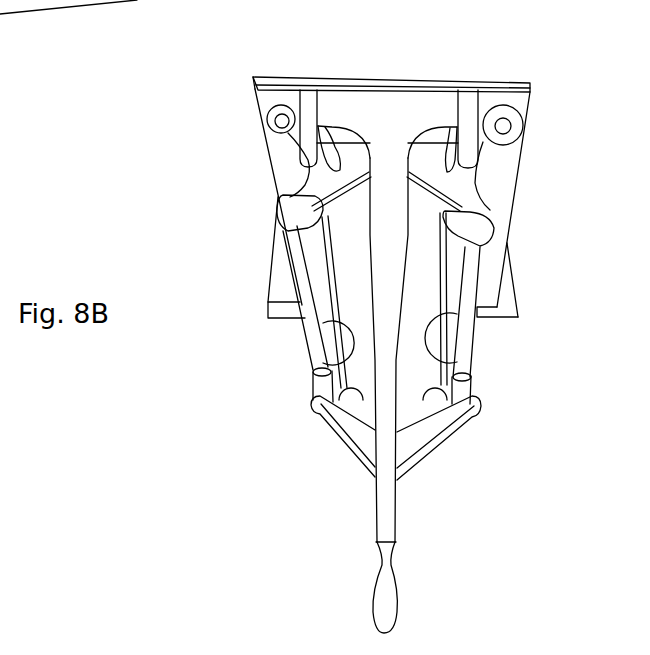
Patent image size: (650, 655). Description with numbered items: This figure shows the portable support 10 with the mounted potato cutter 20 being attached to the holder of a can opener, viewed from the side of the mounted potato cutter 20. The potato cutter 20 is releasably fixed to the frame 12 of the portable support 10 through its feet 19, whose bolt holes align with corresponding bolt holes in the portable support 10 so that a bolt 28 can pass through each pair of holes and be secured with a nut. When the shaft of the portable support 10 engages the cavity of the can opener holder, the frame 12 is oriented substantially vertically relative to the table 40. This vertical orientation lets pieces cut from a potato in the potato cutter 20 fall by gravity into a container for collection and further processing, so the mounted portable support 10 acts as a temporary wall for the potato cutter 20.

The portable support 10 is at (518, 58).
The frame 12 is at (498, 185).
The feet 19 is at (279, 110).
The potato cutter 20 is at (458, 455).
The bolt 28 is at (511, 126).
The table 40 is at (507, 295).